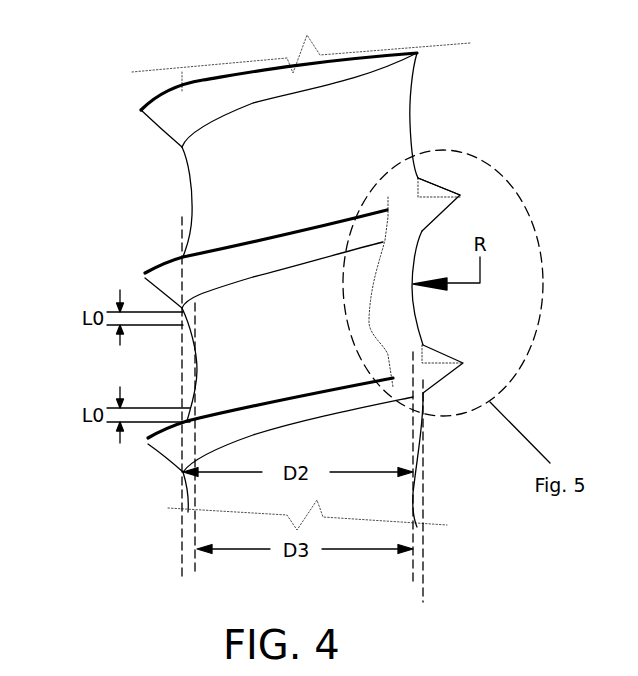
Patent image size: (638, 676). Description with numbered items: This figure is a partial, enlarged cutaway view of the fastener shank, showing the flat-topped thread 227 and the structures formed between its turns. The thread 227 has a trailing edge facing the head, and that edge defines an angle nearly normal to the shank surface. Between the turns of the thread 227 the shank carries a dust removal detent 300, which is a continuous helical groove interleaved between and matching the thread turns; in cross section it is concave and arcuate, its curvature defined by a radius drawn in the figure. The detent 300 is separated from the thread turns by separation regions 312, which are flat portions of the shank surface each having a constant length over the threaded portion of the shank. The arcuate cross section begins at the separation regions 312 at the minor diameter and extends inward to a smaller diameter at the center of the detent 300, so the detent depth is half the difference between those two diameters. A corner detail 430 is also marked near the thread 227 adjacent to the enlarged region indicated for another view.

The separation regions 312 is at (183, 147).
The dust removal detent 300 is at (187, 192).
The notch corner 430 is at (420, 177).
The flat-topped thread 227 is at (460, 195).